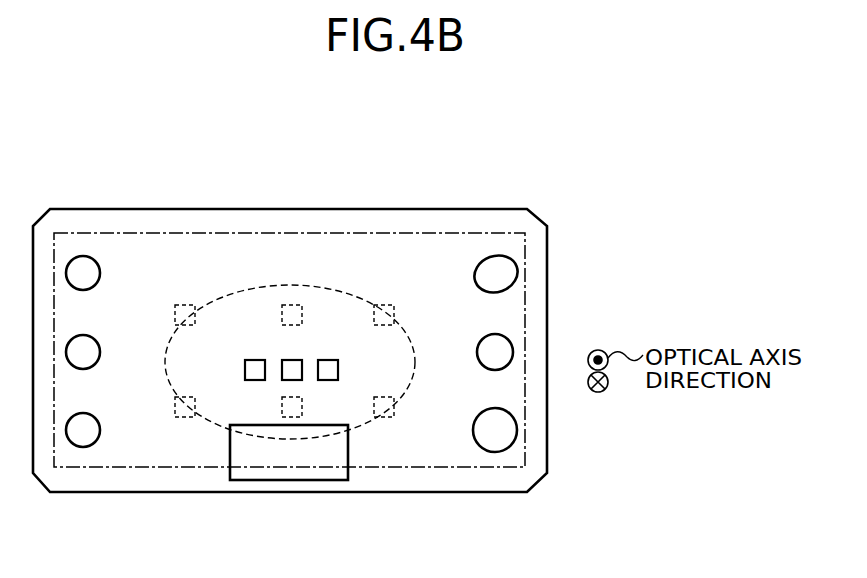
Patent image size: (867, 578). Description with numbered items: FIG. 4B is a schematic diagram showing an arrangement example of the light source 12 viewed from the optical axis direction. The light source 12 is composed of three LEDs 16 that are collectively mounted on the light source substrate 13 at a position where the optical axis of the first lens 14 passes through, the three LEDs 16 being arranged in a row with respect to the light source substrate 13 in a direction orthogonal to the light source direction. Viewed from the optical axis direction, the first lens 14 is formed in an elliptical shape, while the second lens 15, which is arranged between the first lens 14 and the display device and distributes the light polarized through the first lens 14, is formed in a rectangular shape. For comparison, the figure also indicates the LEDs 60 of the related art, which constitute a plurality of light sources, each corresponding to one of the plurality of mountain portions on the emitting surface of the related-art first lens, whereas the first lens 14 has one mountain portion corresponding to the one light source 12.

The light source 12 is at (243, 309).
The light source substrate 13 is at (457, 206).
The first lens 14 is at (338, 286).
The second lens 15 is at (530, 306).
The LED 16 is at (281, 362).
The LED 60 is at (186, 305).